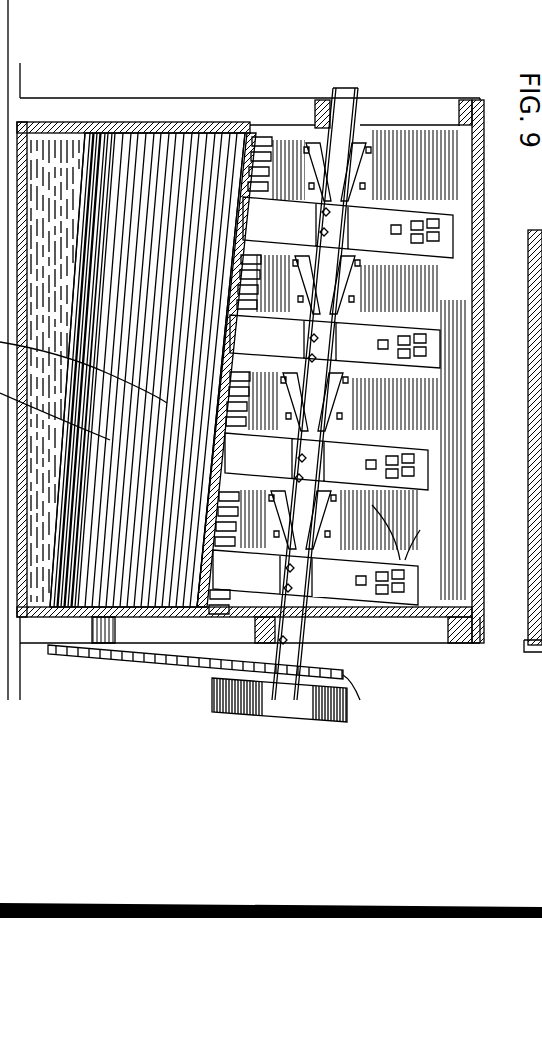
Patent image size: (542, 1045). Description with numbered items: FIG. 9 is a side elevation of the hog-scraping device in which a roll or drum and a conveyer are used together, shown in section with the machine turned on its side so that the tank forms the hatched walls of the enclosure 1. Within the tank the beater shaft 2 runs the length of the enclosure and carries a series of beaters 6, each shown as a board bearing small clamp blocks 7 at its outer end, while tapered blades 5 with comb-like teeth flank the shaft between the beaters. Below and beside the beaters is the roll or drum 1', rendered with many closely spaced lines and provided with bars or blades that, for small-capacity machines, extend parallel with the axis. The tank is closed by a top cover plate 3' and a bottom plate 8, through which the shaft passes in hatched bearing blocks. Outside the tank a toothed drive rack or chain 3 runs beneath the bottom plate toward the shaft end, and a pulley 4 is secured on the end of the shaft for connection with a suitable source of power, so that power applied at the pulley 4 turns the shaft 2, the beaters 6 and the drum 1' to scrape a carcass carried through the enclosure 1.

The housing 1 is at (250, 344).
The drum 1' is at (200, 370).
The shaft 2 is at (360, 703).
The drive rack 3 is at (204, 684).
The top cover plate 3' is at (250, 88).
The pulley 4 is at (315, 707).
The comb teeth and blades 5 is at (262, 512).
The beater boards 6 is at (541, 333).
The clamp 7 is at (507, 405).
The bottom plate 8 is at (478, 622).